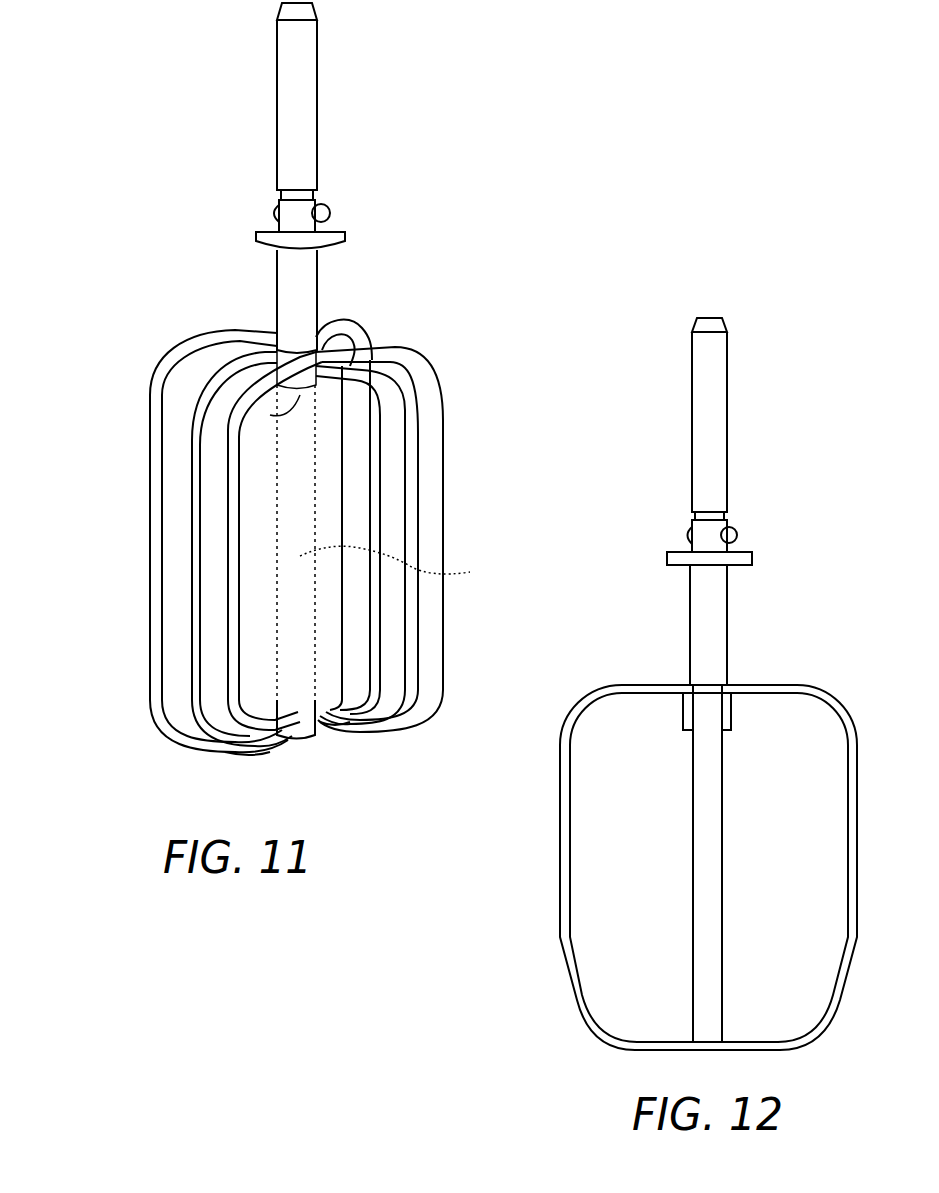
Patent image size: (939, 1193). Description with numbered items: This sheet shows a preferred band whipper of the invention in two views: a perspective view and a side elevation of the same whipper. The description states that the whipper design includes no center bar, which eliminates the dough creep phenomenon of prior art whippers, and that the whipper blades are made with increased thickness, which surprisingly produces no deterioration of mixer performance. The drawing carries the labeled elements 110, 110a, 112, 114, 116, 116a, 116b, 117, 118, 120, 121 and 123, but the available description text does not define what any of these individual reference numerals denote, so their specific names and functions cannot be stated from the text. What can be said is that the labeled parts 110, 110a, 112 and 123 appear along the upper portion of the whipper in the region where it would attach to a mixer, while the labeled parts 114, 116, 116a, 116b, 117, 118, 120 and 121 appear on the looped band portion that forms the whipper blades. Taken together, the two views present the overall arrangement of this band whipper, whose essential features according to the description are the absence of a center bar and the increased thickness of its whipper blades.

In FIG. 11, the shaft 110 is at (312, 120).
In FIG. 12, the shaft 110 is at (729, 436).
In FIG. 11, the shaft lower end 110a is at (272, 410).
In FIG. 12, the shaft lower end 110a is at (685, 712).
In FIG. 11, the coupling 112 is at (318, 205).
In FIG. 11, the first bend 114 is at (290, 330).
In FIG. 11, the front loop 116 is at (420, 366).
In FIG. 12, the front loop 116 is at (708, 867).
In FIG. 11, the loop end 116a is at (338, 728).
In FIG. 11, the loop end 116b is at (288, 742).
In FIG. 11, the central bar 117 is at (307, 745).
In FIG. 11, the second bend 118 is at (326, 326).
In FIG. 11, the side loops 120 is at (163, 472).
In FIG. 11, the connection region 121 is at (407, 563).
In FIG. 11, the flange 123 is at (334, 236).